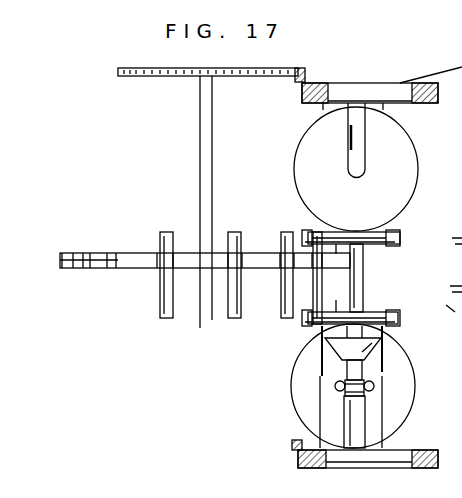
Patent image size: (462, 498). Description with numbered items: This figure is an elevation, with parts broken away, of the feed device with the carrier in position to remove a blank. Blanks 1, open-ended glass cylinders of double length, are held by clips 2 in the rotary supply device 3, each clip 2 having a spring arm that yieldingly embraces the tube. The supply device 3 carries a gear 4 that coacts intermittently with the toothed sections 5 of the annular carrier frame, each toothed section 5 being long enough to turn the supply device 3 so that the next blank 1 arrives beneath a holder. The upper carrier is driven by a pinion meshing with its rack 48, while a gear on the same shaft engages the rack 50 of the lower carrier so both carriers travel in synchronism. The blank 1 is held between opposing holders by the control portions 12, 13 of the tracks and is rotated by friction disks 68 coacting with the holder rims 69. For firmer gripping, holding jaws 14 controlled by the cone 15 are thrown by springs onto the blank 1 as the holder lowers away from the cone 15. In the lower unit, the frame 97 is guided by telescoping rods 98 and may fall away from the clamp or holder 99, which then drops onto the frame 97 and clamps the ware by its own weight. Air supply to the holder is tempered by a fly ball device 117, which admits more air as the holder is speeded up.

The blank 1 is at (211, 315).
The clip 2 is at (112, 269).
The rotary supply device 3 is at (140, 253).
The gear 4 is at (176, 78).
The toothed section 5 is at (294, 70).
The rack 48 is at (301, 84).
The friction disk 68 is at (411, 153).
The holder rim 69 is at (396, 236).
The holder 99 is at (400, 239).
The frame 97 is at (372, 245).
The control portion of the track 12 is at (320, 232).
The control portion of the track 13 is at (304, 316).
The holding jaw 14 is at (375, 341).
The cone 15 is at (325, 338).
The fly ball device 117 is at (336, 386).
The telescoping rod 98 is at (320, 370).
The rack 50 is at (291, 445).